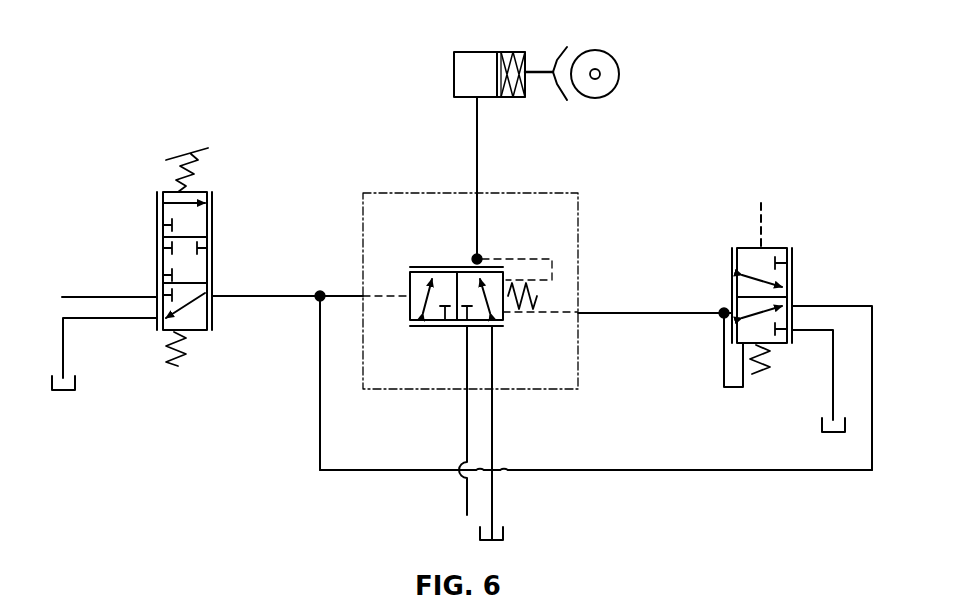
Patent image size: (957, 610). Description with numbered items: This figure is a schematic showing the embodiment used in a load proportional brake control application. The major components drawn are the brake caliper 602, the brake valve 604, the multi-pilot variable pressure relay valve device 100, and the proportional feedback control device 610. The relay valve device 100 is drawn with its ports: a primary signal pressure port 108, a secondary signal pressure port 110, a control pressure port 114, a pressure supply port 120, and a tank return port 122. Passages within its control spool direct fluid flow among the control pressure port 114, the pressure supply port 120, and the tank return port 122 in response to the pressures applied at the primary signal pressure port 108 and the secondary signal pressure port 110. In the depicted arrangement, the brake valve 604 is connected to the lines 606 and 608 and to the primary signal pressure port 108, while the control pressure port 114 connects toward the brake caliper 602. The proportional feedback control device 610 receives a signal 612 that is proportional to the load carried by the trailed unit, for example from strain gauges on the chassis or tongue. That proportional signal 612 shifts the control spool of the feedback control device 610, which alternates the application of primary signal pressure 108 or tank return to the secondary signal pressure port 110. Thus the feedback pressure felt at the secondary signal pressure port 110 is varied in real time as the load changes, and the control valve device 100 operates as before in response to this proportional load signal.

The multi-pilot variable pressure relay valve device 100 is at (378, 184).
The primary signal pressure port 108 is at (362, 295).
The secondary signal pressure port 110 is at (585, 312).
The control pressure port 114 is at (477, 193).
The pressure supply port 120 is at (467, 389).
The tank return port 122 is at (492, 389).
The brake caliper 602 is at (468, 52).
The brake valve 604 is at (150, 217).
The supply line 606 is at (157, 295).
The return line 608 is at (157, 322).
The proportional feedback control device 610 is at (792, 270).
The proportional signal 612 is at (761, 203).